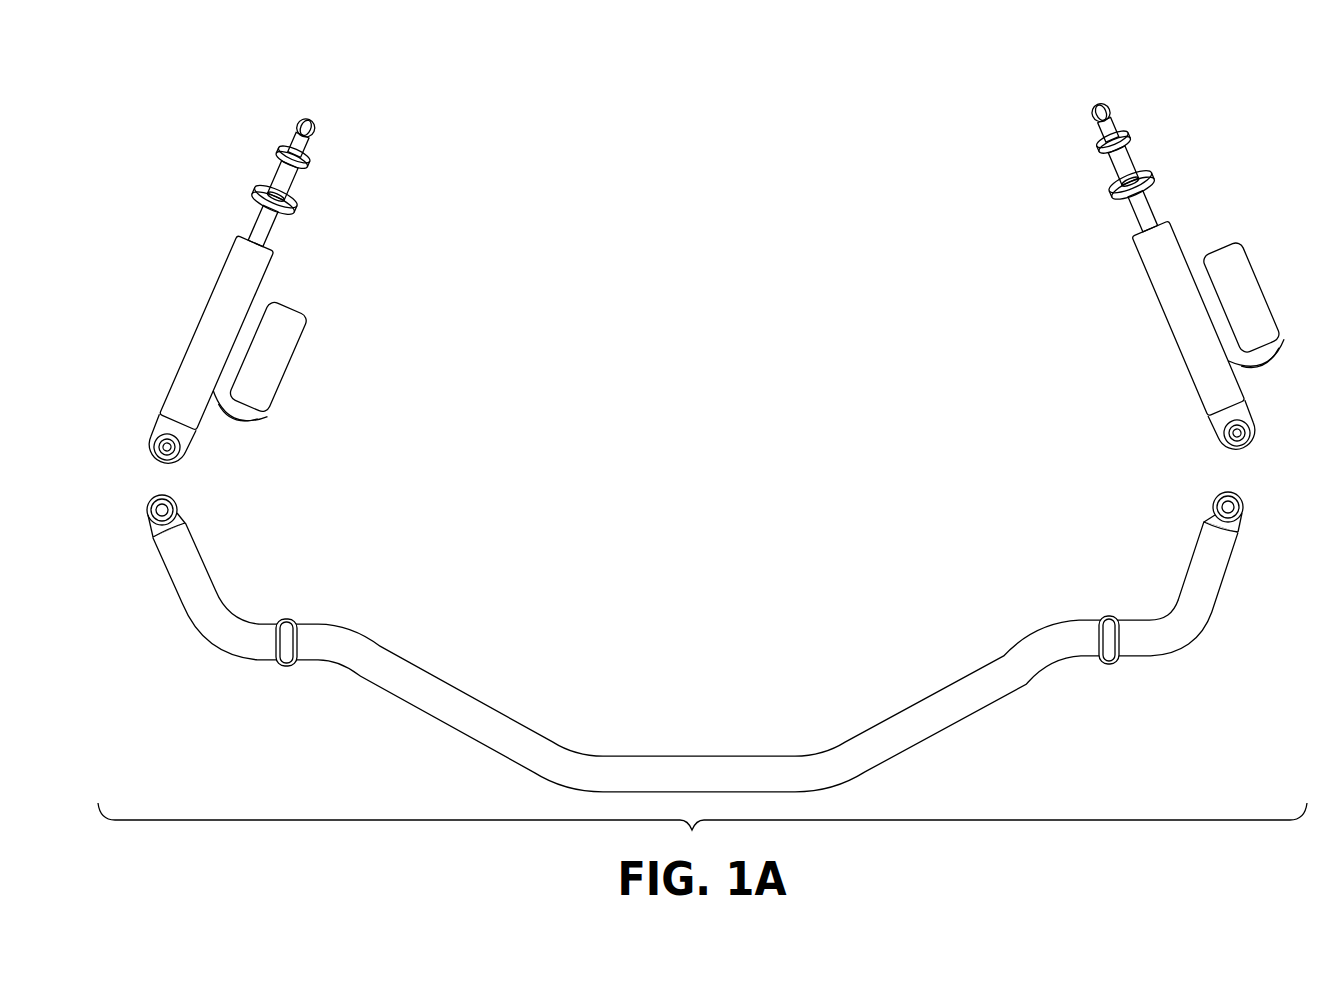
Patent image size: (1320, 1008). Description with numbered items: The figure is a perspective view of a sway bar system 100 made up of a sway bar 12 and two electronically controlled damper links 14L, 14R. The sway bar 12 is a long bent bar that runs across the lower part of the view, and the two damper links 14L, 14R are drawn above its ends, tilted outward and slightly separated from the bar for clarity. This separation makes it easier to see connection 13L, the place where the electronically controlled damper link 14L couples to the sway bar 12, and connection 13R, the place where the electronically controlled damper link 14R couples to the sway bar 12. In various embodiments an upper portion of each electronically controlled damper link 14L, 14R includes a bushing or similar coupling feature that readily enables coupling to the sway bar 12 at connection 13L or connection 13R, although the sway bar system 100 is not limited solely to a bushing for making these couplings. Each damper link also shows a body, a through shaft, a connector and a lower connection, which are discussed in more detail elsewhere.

The sway bar system 100 is at (687, 115).
The sway bar 12 is at (363, 672).
The connection 13L is at (146, 490).
The connection 13R is at (1248, 483).
The electronically controlled damper link 14L is at (224, 275).
The electronically controlled damper link 14R is at (1167, 250).